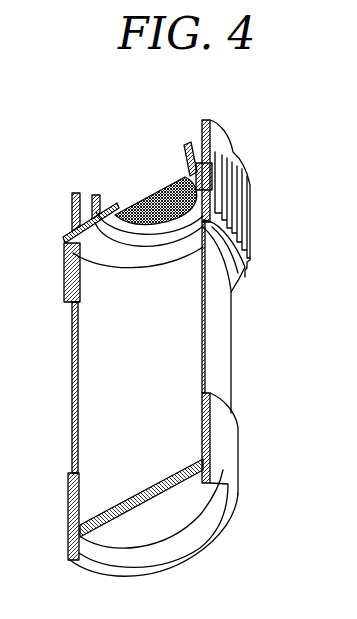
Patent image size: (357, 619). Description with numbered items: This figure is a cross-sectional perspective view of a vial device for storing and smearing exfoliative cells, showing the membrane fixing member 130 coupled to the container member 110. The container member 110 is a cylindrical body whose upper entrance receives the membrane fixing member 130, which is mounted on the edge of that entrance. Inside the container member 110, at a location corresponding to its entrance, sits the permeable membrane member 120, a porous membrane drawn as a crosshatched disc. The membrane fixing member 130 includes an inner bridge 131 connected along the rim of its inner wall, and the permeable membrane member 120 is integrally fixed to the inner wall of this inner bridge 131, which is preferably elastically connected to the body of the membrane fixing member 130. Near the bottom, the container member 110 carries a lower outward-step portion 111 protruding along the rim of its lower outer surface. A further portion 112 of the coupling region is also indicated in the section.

The container member 110 is at (235, 329).
The lower outward-step portion 111 is at (235, 449).
The coupling portion 112 is at (245, 268).
The permeable membrane member 120 is at (147, 193).
The membrane fixing member 130 is at (250, 190).
The inner bridge 131 is at (92, 195).